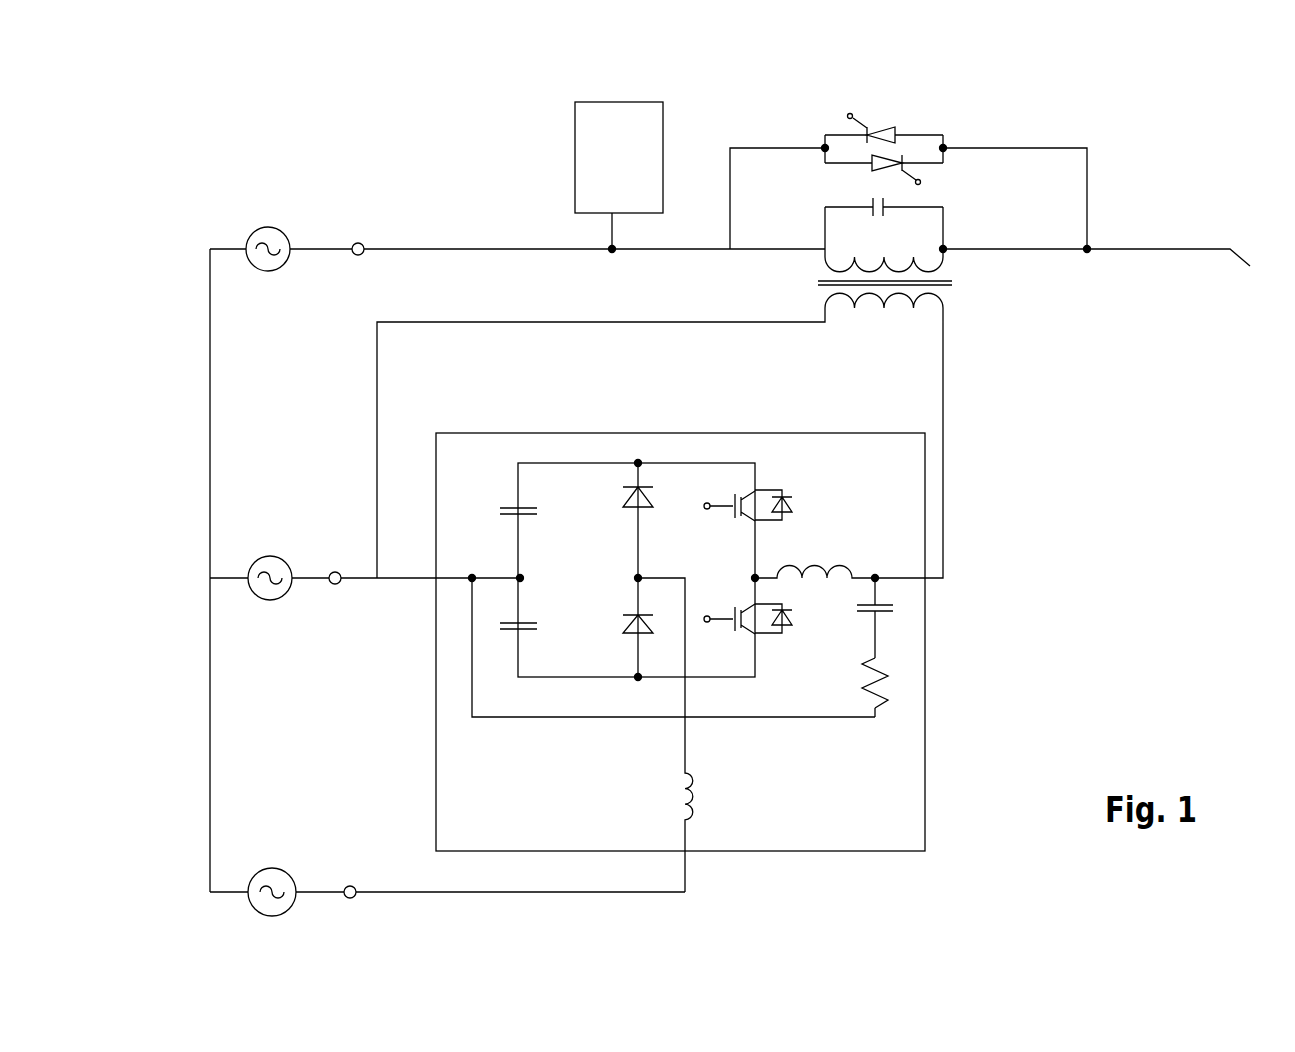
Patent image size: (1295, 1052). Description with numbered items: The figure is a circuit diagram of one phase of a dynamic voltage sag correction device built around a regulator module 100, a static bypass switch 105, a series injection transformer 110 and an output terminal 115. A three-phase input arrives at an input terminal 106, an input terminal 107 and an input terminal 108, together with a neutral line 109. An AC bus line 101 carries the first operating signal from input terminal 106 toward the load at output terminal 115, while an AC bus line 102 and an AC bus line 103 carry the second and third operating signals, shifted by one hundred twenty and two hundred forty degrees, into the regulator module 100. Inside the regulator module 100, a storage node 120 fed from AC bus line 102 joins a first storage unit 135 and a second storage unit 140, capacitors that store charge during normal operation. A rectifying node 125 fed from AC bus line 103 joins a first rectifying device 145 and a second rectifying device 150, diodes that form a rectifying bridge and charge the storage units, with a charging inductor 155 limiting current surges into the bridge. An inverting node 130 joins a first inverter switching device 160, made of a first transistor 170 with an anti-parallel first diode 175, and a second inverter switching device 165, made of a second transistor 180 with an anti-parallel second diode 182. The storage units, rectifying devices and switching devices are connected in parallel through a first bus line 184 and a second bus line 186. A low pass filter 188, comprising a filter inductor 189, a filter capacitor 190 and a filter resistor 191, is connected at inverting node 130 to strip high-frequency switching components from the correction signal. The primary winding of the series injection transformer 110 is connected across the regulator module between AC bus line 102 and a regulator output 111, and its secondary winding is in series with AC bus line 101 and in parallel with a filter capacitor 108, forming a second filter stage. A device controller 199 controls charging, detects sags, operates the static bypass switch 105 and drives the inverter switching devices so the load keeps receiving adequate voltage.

The regulator module 100 is at (927, 793).
The AC bus line 101 is at (487, 247).
The AC bus line 102 is at (365, 576).
The AC bus line 103 is at (412, 888).
The static bypass switch 105 is at (823, 137).
The input terminal 106 is at (354, 256).
The input terminal 107 is at (337, 586).
The input terminal / filter capacitor 108 is at (873, 197).
The neutral line 109 is at (212, 398).
The series injection transformer 110 is at (953, 273).
The regulator output 111 is at (877, 570).
The output terminal 115 is at (1110, 271).
The storage node 120 is at (530, 572).
The rectifying node 125 is at (643, 570).
The inverting node 130 is at (760, 567).
The first storage unit 135 is at (512, 505).
The second storage unit 140 is at (543, 623).
The first rectifying device 145 is at (643, 488).
The second rectifying device 150 is at (630, 652).
The charging inductor 155 is at (700, 788).
The first inverter switching device 160 is at (773, 558).
The second inverter switching device 165 is at (791, 642).
The first transistor 170 is at (735, 498).
The first diode 175 is at (783, 500).
The second transistor 180 is at (735, 610).
The second diode 182 is at (787, 607).
The first bus line 184 is at (583, 462).
The second bus line 186 is at (740, 678).
The low pass filter 188 is at (931, 645).
The filter inductor 189 is at (803, 567).
The filter capacitor 190 is at (885, 602).
The filter resistor 191 is at (890, 677).
The device controller 199 is at (663, 102).